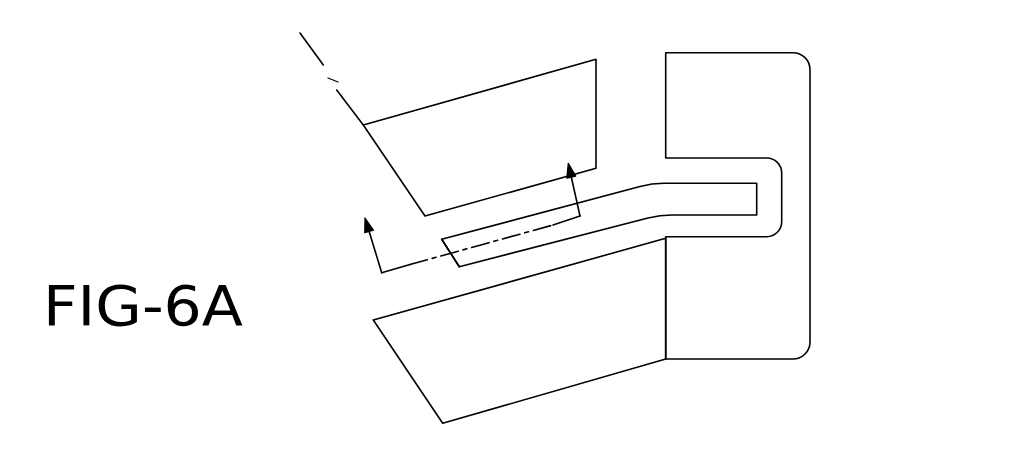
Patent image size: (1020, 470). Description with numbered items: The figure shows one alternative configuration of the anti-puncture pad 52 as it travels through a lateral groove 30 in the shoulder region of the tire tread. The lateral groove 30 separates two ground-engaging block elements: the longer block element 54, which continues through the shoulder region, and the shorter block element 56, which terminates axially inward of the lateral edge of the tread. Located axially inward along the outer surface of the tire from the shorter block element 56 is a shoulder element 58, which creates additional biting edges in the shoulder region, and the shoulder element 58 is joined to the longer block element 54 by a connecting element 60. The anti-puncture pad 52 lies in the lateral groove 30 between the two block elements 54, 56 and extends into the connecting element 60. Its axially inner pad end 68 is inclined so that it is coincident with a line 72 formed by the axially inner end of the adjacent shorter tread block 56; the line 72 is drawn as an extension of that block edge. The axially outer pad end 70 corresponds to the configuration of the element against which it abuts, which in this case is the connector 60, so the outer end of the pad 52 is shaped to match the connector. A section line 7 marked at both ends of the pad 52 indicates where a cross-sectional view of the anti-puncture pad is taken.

The section line 7- 7 is at (464, 196).
The lateral groove 30 is at (560, 253).
The anti-puncture pad 52 is at (663, 202).
The longer block element 54 is at (568, 342).
The shorter block element 56 is at (493, 157).
The shoulder element 58 is at (743, 122).
The connecting element 60 is at (793, 217).
The axially inner pad end 68 is at (452, 260).
The axially outer pad end 70 is at (757, 193).
The line formed by the axially inner end of the adjacent tread block 72 is at (332, 79).